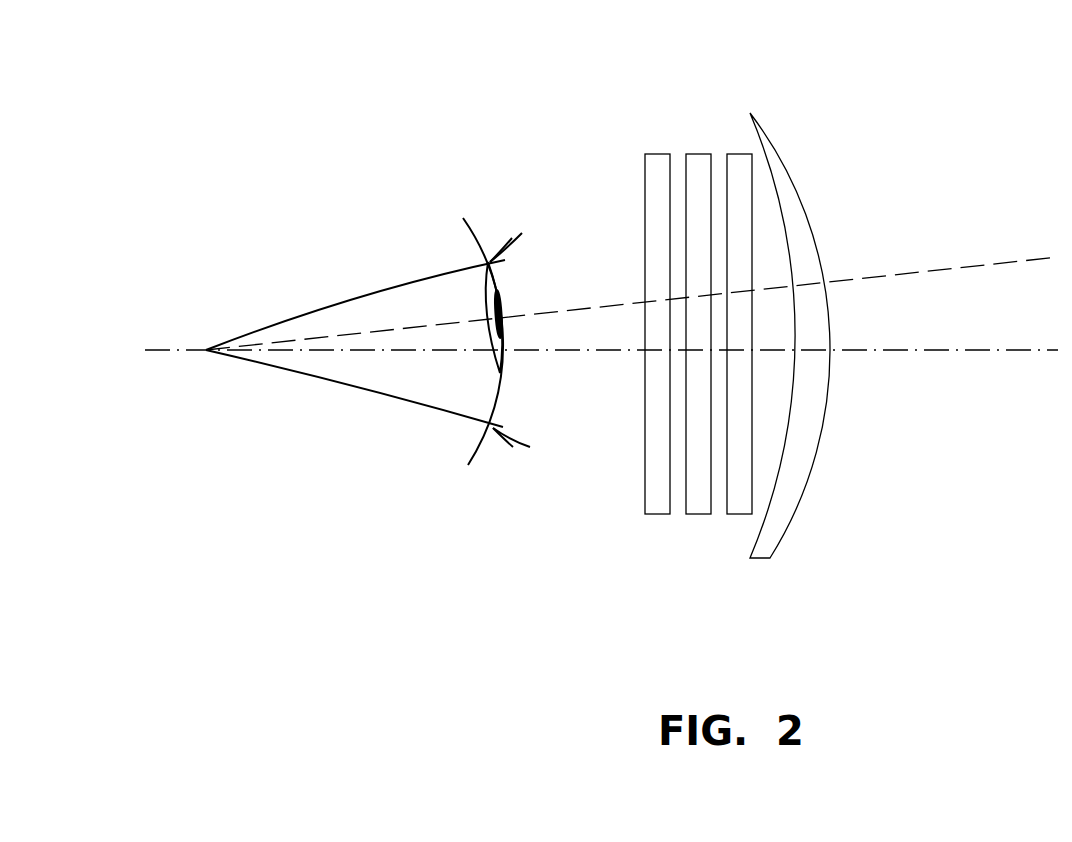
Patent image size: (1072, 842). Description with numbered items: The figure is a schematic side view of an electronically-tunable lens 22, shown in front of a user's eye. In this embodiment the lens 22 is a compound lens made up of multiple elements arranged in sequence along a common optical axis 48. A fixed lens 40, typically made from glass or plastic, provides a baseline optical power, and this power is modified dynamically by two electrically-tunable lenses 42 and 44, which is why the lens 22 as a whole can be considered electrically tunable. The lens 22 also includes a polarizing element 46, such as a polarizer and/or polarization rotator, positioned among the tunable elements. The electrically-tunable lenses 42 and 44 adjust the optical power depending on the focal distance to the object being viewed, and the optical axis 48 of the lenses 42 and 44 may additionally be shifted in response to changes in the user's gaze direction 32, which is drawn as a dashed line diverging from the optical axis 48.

The electronically-tunable lens 22 is at (719, 341).
The gaze direction 32 is at (988, 267).
The fixed lens 40 is at (770, 113).
The electrically-tunable lens 42 is at (699, 154).
The electrically-tunable lens 44 is at (655, 154).
The polarizing element 46 is at (744, 154).
The optical axis 48 is at (953, 350).